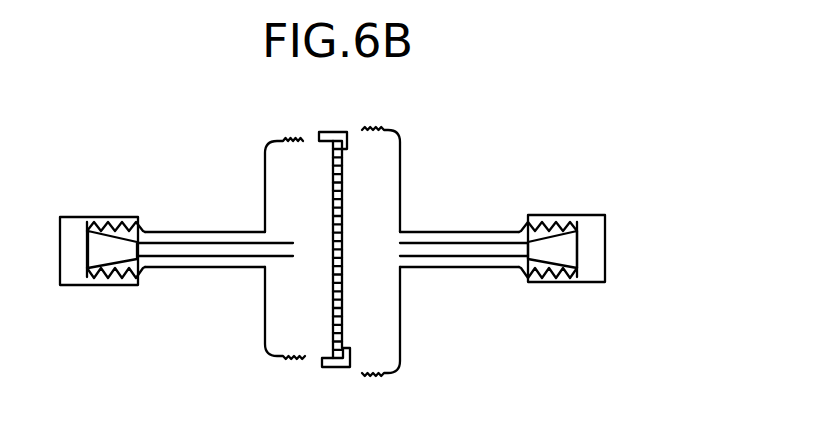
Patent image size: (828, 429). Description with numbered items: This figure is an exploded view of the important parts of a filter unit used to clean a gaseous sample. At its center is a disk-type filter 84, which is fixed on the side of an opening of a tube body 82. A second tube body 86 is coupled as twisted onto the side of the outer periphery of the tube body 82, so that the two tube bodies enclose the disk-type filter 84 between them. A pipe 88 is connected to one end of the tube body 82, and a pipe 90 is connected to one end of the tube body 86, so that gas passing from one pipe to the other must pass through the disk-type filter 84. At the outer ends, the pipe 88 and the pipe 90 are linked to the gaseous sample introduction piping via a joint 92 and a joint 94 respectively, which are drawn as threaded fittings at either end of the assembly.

The tube body 82 is at (265, 337).
The disk-type filter 84 is at (342, 190).
The tube body 86 is at (400, 333).
The pipe 88 is at (182, 232).
The pipe 90 is at (478, 232).
The joint 92 is at (97, 217).
The joint 94 is at (563, 215).